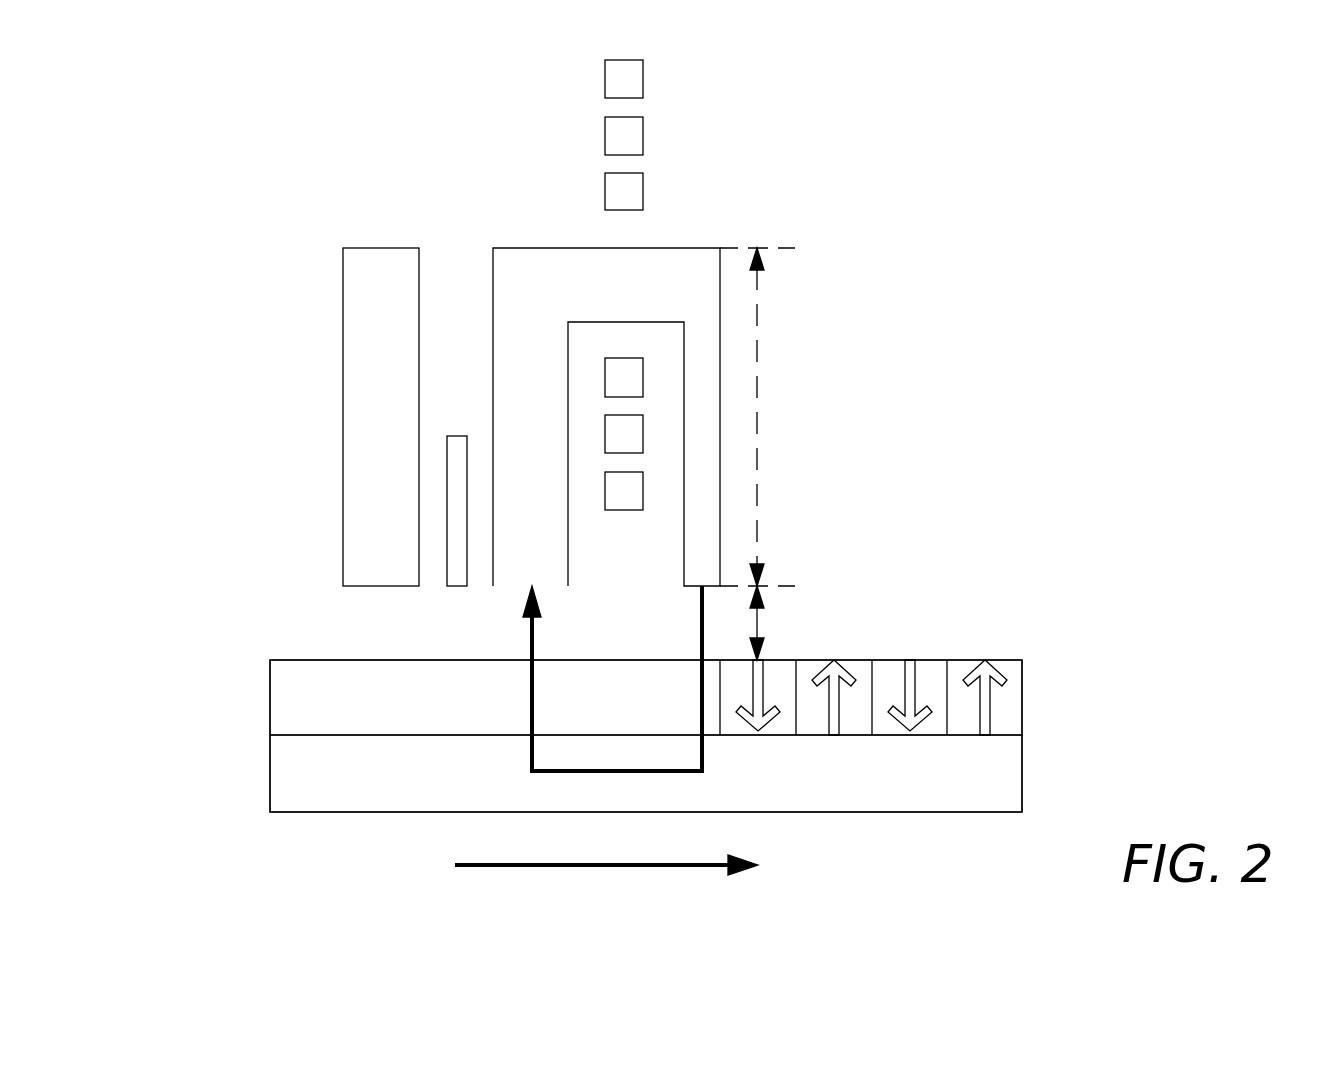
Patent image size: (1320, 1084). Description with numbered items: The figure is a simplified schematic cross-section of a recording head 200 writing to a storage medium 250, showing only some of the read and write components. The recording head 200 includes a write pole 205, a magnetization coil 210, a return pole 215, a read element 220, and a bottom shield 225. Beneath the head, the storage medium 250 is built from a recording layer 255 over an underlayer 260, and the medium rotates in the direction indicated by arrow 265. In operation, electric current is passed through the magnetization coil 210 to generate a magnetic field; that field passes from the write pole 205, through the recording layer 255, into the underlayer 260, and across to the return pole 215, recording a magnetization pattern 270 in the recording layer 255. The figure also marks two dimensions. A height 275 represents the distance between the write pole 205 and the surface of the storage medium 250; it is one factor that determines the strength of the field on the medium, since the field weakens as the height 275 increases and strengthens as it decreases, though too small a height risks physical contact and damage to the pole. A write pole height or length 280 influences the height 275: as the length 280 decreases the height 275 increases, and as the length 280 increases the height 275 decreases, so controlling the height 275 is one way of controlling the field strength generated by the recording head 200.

The recording head 200 is at (987, 214).
The write pole 205 is at (720, 360).
The magnetization coil 210 is at (627, 435).
The return pole 215 is at (512, 305).
The read element 220 is at (467, 550).
The bottom shield 225 is at (362, 362).
The storage medium 250 is at (1043, 768).
The recording layer 255 is at (327, 717).
The underlayer 260 is at (288, 792).
The arrow 265 is at (513, 867).
The magnetization pattern 270 is at (927, 660).
The height 275 is at (758, 620).
The write pole height or length 280 is at (758, 512).